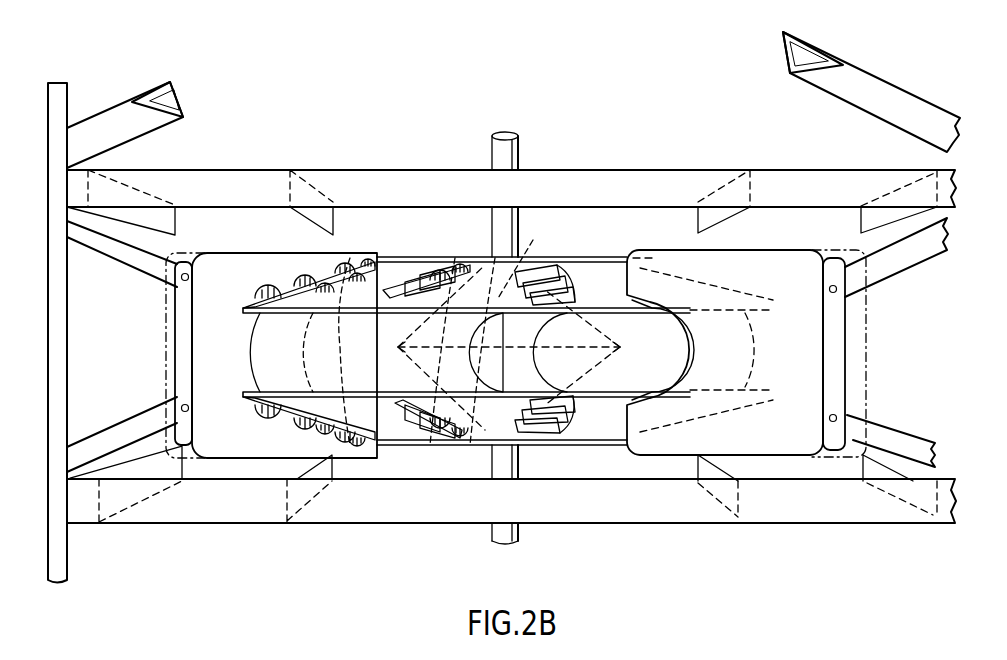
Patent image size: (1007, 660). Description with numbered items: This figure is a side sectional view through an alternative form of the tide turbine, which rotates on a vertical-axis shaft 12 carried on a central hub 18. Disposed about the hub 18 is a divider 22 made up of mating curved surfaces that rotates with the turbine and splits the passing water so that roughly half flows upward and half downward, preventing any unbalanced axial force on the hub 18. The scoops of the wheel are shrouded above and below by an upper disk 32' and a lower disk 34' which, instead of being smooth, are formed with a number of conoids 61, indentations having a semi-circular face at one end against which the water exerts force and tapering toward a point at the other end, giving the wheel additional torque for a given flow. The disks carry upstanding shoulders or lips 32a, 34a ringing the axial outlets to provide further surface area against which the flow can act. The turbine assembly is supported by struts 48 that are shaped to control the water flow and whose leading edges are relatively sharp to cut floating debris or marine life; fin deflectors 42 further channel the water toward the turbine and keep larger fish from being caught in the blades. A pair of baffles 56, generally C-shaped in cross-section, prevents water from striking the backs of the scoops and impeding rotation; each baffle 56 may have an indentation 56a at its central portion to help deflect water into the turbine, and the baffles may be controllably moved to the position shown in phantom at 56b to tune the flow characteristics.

The shaft 12 is at (519, 150).
The central hub 18 is at (529, 259).
The divider 22 is at (606, 296).
The upper disk 32' is at (356, 263).
The upper shoulder or lip 32a is at (605, 258).
The lower disk 34' is at (352, 437).
The lower shoulder or lip 34a is at (475, 443).
The fin deflectors 42 is at (283, 523).
The struts 48 is at (58, 563).
The baffles 56 is at (232, 460).
The indentation 56a is at (690, 345).
The baffle phantom position 56b is at (160, 488).
The conoids 61 is at (330, 268).